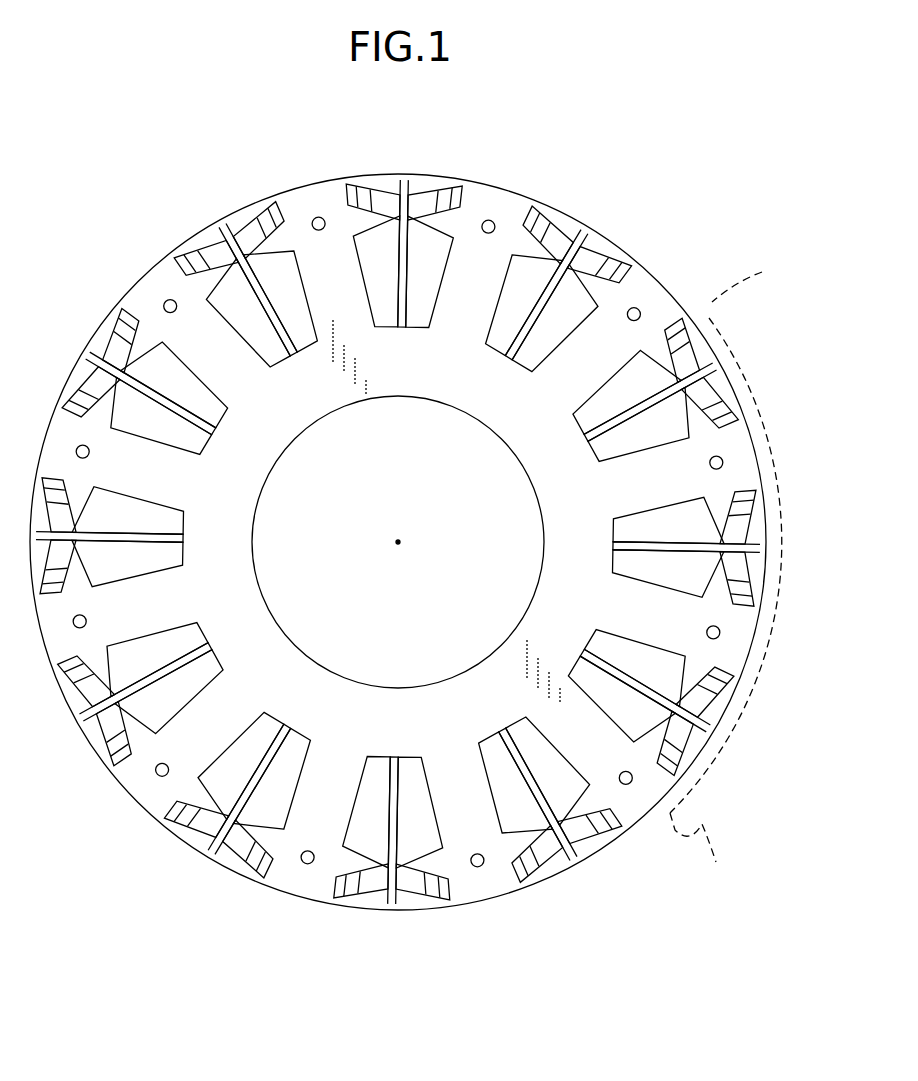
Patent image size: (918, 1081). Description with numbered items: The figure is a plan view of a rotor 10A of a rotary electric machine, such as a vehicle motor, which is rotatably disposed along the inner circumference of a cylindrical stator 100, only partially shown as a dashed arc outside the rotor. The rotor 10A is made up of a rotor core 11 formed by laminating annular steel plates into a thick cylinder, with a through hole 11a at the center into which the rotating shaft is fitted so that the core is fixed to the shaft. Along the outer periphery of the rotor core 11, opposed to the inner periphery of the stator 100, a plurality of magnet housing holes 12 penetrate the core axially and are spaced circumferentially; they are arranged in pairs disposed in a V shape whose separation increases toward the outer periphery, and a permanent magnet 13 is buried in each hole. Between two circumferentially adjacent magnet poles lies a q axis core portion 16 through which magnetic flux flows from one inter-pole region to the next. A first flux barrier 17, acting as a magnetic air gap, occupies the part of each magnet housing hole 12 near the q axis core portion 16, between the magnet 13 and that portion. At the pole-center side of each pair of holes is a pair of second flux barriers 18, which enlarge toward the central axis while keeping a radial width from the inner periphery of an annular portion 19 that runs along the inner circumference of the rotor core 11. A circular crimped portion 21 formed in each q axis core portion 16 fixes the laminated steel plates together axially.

The rotor 10A is at (165, 172).
The rotor core 11 is at (118, 288).
The through hole 11a is at (487, 427).
The magnet housing hole 12 is at (383, 194).
The magnet 13 is at (412, 196).
The q axis core portion 16 is at (345, 299).
The first flux barrier 17 is at (360, 196).
The second flux barrier 18 is at (392, 271).
The annular portion 19 is at (262, 435).
The crimped portion 21 is at (318, 217).
The stator 100 is at (683, 835).